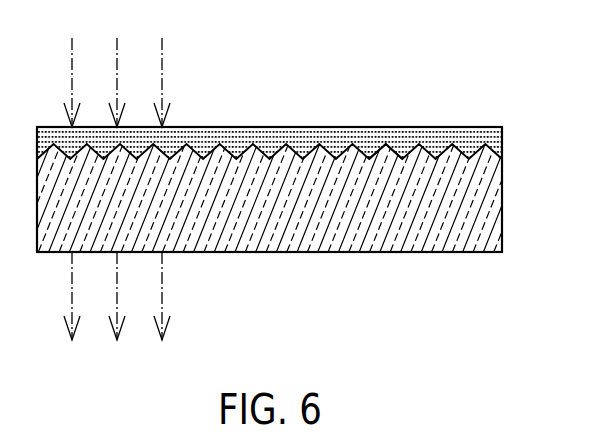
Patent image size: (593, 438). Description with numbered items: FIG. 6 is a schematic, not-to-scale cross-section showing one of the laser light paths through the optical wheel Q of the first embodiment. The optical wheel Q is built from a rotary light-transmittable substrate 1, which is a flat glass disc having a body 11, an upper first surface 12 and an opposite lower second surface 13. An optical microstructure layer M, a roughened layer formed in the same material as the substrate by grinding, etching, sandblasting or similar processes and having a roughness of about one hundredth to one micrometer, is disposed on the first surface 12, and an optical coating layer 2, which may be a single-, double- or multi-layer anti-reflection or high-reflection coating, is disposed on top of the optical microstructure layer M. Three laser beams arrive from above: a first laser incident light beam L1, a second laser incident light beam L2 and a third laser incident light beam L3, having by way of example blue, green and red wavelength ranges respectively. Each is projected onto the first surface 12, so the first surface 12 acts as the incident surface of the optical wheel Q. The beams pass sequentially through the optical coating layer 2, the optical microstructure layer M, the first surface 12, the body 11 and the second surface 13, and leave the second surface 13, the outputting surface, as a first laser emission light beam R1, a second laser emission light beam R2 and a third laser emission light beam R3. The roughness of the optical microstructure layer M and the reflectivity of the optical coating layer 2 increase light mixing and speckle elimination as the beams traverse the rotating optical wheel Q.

The rotary light-transmittable substrate 1 is at (502, 218).
The body 11 is at (470, 180).
The first surface 12 is at (442, 145).
The second surface 13 is at (470, 252).
The optical coating layer 2 is at (502, 136).
The optical microstructure layer M is at (392, 144).
The optical wheel Q is at (482, 118).
The first laser incident light beam L1 is at (70, 70).
The second laser incident light beam L2 is at (117, 70).
The third laser incident light beam L3 is at (162, 70).
The first laser emission light beam R1 is at (71, 309).
The second laser emission light beam R2 is at (117, 309).
The third laser emission light beam R3 is at (162, 309).